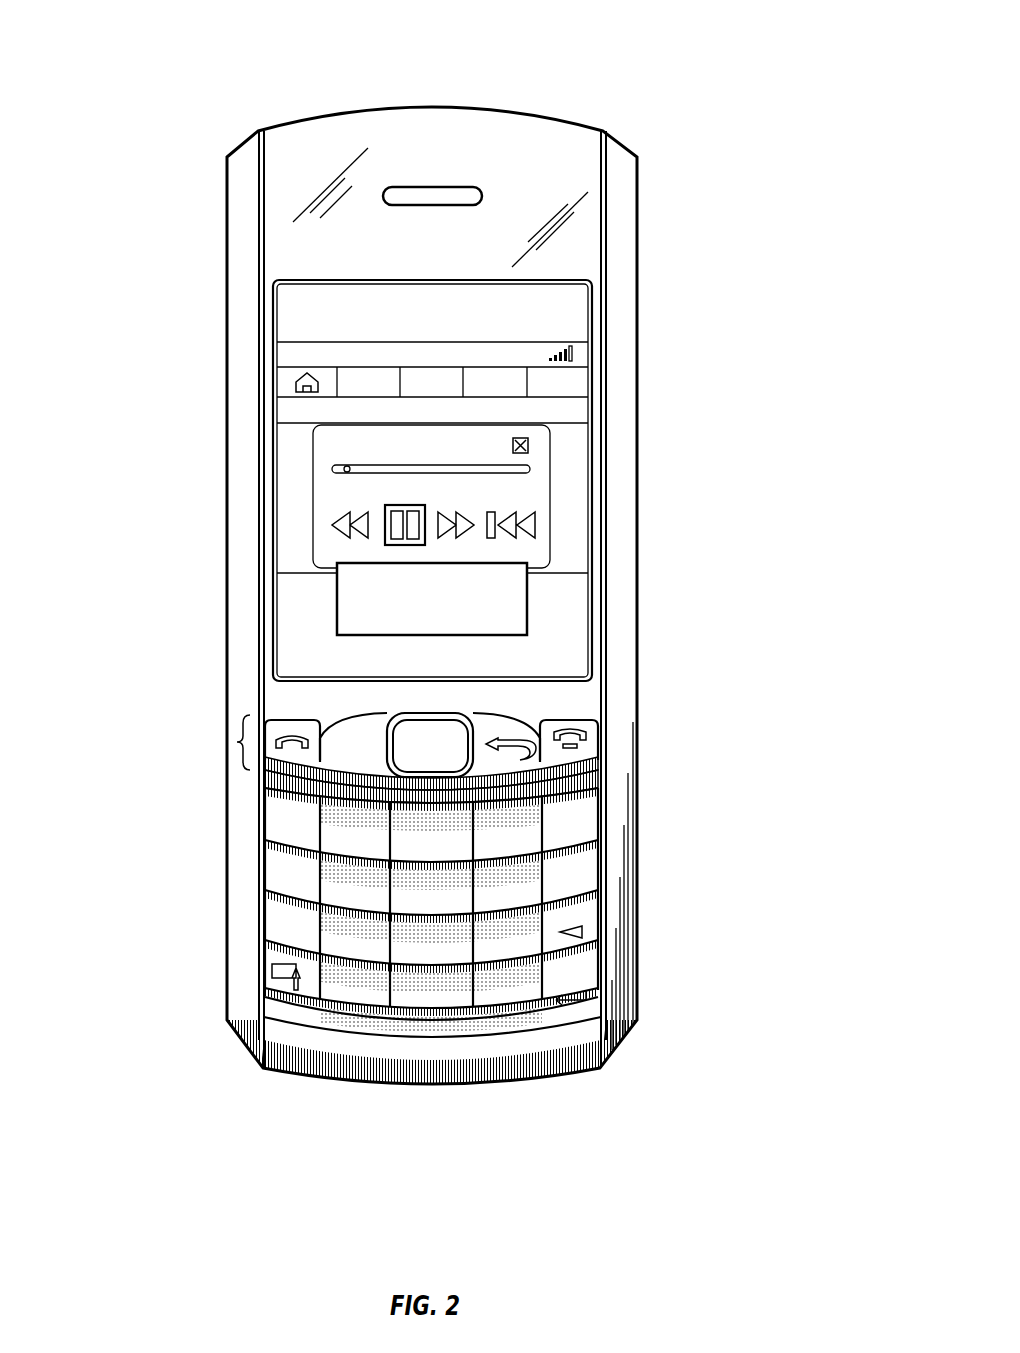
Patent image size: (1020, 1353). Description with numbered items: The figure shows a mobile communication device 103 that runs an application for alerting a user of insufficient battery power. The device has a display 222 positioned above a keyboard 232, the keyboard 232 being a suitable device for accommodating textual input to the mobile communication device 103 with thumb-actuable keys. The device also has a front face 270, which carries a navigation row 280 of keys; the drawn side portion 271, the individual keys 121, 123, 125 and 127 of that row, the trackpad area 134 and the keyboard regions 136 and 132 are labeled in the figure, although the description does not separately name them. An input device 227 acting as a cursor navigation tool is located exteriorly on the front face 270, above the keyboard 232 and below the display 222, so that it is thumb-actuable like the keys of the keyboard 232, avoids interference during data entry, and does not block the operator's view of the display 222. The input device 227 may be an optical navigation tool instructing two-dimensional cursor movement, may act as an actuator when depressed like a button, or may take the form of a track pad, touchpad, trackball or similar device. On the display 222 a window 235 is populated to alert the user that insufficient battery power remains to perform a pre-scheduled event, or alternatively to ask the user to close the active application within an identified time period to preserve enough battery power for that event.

The mobile communication device 103 is at (588, 38).
The left side housing portion 271 is at (222, 158).
The front face 270 is at (624, 193).
The display 222 is at (298, 318).
The trackpad navigation tool 134 is at (413, 717).
The menu key 123 is at (357, 728).
The send/call key 121 is at (290, 723).
The navigation row 280 is at (237, 741).
The input device 227 is at (405, 757).
The window 235 is at (528, 613).
The back/escape key 125 is at (507, 723).
The end key 127 is at (572, 727).
The keyboard 136 is at (430, 740).
The keys 132 is at (415, 785).
The keyboard 232 is at (447, 1052).